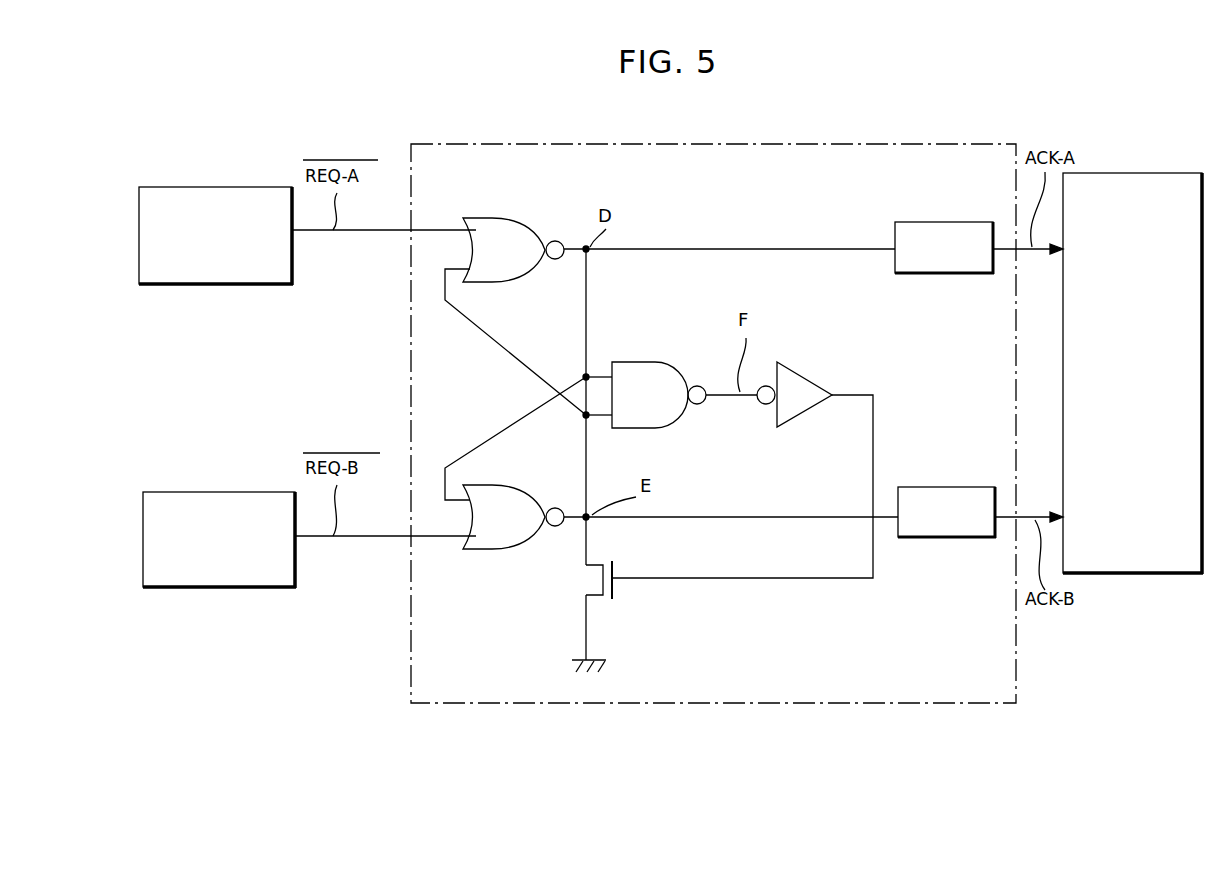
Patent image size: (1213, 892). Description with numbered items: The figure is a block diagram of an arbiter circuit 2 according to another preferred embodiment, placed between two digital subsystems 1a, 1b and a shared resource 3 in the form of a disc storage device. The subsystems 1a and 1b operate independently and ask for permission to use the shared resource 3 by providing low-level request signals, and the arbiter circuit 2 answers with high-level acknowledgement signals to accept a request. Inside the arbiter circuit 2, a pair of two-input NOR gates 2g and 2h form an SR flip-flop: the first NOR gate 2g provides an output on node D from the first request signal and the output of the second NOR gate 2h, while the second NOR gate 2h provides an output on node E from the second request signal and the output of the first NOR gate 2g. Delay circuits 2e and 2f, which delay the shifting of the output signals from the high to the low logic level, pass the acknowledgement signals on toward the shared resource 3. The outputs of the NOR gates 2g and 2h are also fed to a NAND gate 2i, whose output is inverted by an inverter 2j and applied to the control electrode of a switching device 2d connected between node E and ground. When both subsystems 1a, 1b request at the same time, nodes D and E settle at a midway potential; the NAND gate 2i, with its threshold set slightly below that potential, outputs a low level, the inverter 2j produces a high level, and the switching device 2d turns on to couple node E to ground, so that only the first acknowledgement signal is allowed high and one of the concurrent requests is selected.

The subsystem 1a is at (212, 187).
The subsystem 1b is at (222, 492).
The arbiter circuit 2 is at (862, 143).
The first NOR gate 2g is at (515, 218).
The second NOR gate 2h is at (510, 550).
The NAND gate 2i is at (650, 362).
The inverter 2j is at (790, 362).
The delay circuit 2e is at (948, 222).
The delay circuit 2f is at (950, 487).
The switching device 2d is at (620, 593).
The shared resource 3 is at (1165, 173).